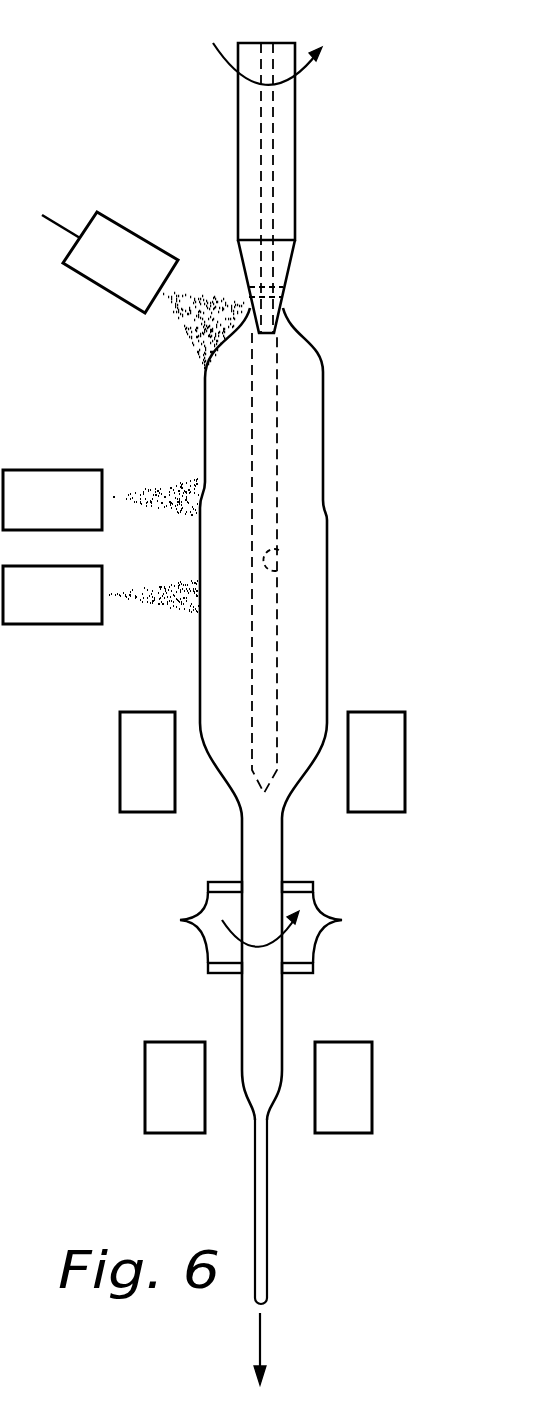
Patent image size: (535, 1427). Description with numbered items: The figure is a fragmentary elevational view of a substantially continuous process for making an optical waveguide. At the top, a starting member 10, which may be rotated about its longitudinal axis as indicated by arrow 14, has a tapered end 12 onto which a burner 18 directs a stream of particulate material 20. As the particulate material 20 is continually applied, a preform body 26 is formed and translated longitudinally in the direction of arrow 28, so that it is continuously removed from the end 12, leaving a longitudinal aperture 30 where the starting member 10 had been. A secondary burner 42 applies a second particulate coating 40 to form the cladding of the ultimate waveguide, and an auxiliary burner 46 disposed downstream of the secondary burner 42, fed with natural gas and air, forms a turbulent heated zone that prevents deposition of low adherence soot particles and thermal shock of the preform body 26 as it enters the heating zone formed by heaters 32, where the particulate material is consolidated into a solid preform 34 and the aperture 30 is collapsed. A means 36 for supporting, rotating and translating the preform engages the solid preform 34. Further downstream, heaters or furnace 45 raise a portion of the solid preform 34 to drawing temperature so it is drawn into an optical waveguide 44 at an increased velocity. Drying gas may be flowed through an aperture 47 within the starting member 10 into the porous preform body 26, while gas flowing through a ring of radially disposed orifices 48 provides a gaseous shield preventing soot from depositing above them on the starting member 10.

The starting member 10 is at (295, 137).
The end of starting member 12 is at (293, 262).
The arrow 14 is at (222, 64).
The burner 18 is at (140, 236).
The particulate material 20 is at (198, 320).
The preform body 26 is at (323, 360).
The arrow 28 is at (262, 1338).
The longitudinal aperture 30 is at (279, 568).
The heaters 32 is at (377, 830).
The solid preform 34 is at (283, 862).
The means for supporting, rotating, and translating the preform 36 is at (345, 920).
The second particulate coating 40 is at (327, 656).
The secondary burner 42 is at (52, 470).
The optical waveguide 44 is at (265, 1226).
The heaters or furnace 45 is at (343, 1150).
The auxiliary burner 46 is at (52, 626).
The aperture 47 is at (268, 43).
The ring of radially disposed orifices 48 is at (283, 297).